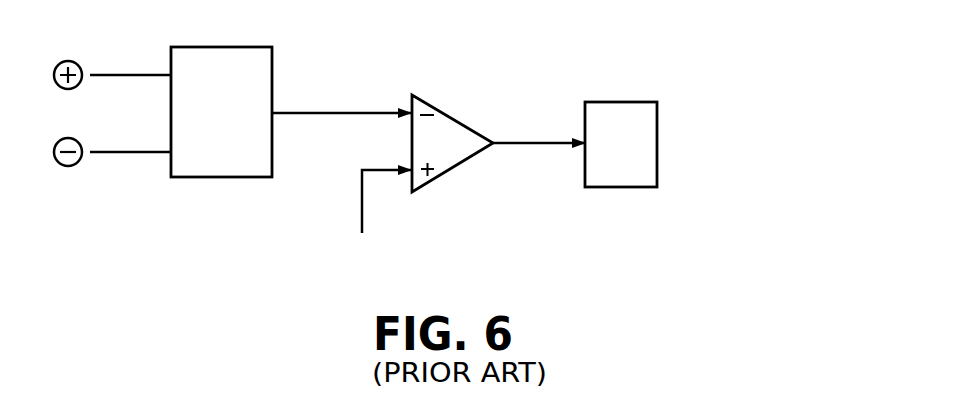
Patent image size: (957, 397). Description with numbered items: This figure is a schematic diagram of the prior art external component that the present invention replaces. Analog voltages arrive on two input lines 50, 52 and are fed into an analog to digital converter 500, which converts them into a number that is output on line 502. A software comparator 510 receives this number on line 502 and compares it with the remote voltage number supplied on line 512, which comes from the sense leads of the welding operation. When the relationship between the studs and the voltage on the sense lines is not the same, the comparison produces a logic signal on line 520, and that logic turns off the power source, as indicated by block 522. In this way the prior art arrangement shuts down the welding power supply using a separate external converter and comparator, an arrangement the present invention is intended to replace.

The analog voltage line 50 is at (125, 73).
The analog voltage line 52 is at (120, 153).
The analog to digital converter 500 is at (225, 177).
The converter output line 502 is at (320, 115).
The software comparator 510 is at (458, 168).
The remote voltage number line 512 is at (362, 213).
The logic output line 520 is at (528, 145).
The power source turn-off block 522 is at (625, 187).